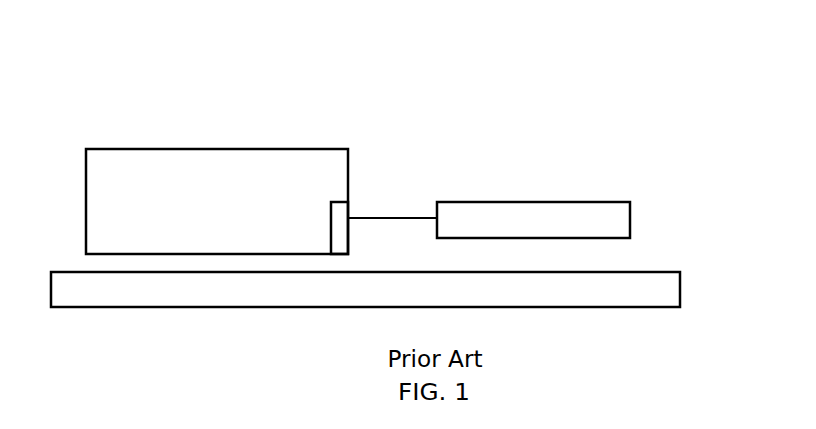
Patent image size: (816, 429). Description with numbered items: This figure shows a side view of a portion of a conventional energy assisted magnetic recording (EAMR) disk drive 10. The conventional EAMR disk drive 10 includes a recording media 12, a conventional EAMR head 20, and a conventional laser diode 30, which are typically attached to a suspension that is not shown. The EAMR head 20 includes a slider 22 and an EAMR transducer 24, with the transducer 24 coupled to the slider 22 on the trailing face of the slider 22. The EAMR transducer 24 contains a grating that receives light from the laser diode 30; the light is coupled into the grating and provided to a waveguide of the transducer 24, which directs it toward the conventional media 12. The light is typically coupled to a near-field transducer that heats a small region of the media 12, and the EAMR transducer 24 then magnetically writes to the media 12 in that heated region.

The conventional EAMR disk drive 10 is at (453, 74).
The recording media 12 is at (683, 290).
The conventional EAMR head 20 is at (186, 122).
The slider 22 is at (86, 183).
The EAMR transducer 24 is at (347, 209).
The conventional laser diode 30 is at (634, 219).